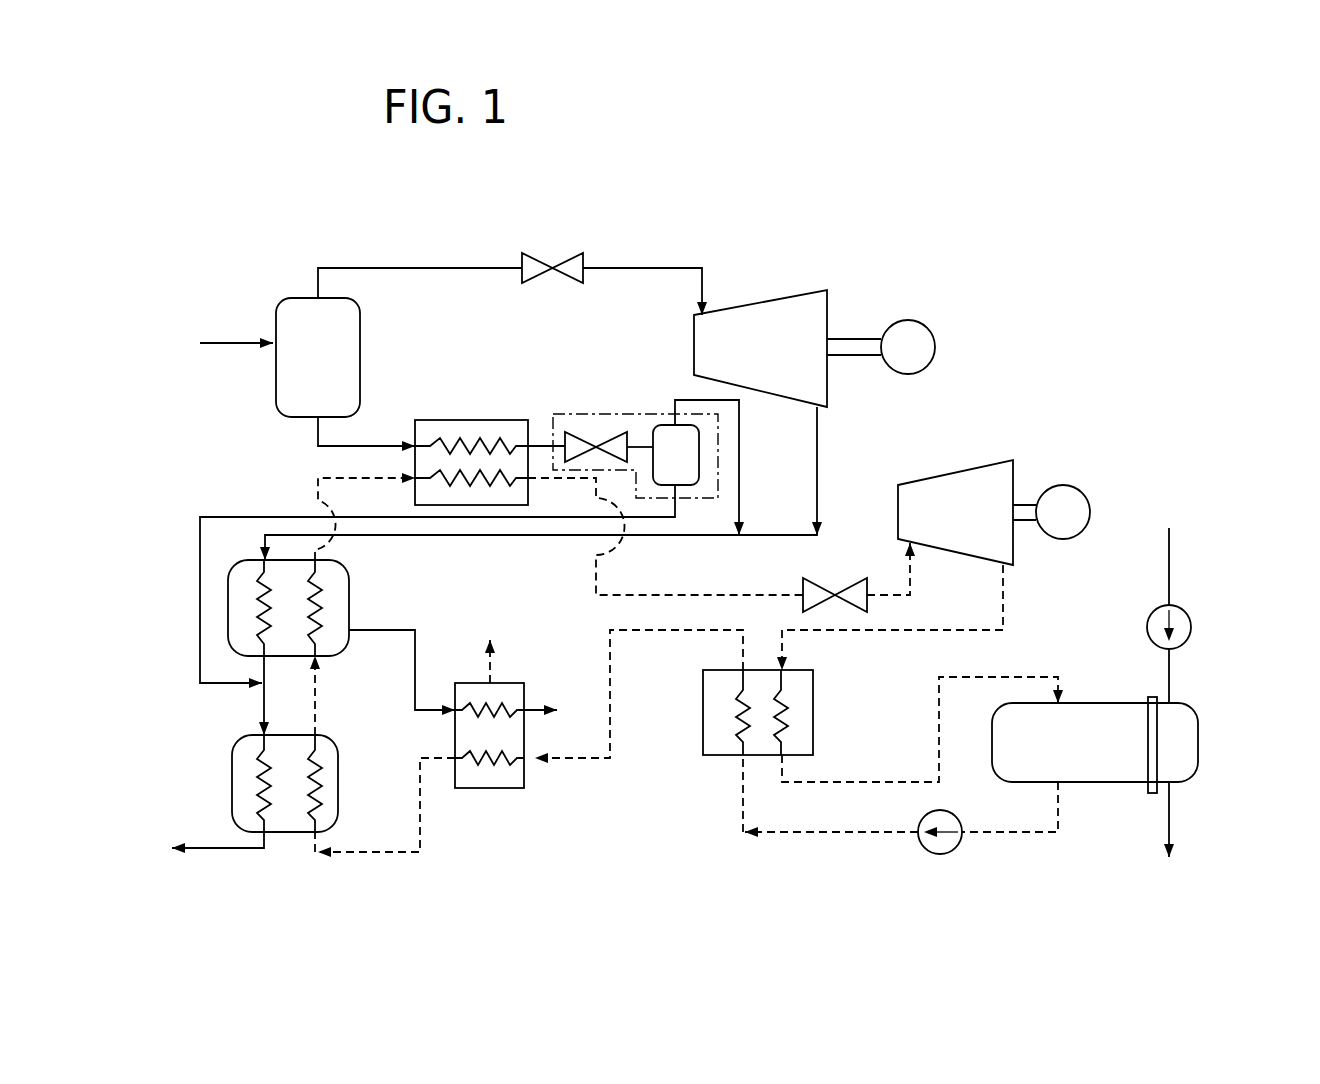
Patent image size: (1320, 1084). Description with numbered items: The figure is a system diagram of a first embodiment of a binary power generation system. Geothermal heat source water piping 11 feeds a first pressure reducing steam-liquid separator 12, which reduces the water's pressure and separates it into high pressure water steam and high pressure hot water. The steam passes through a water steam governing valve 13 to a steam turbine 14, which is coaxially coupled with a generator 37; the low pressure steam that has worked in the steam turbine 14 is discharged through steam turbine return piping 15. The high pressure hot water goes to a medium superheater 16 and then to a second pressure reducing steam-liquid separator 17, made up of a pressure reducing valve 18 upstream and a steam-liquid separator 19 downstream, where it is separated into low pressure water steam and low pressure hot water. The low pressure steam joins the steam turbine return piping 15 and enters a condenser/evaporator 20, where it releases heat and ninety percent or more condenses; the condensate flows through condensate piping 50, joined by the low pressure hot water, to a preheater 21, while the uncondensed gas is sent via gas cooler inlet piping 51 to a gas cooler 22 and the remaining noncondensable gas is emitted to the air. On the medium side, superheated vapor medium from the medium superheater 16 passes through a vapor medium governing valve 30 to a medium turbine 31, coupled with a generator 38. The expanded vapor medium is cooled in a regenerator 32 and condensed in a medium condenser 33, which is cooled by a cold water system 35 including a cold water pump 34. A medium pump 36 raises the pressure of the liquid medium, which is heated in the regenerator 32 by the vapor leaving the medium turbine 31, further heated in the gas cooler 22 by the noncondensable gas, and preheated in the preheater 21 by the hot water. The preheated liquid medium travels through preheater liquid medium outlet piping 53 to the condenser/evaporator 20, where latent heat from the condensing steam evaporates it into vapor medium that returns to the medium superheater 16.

The geothermal heat source water piping 11 is at (234, 336).
The first pressure reducing steam-liquid separator 12 is at (360, 333).
The water steam governing valve 13 is at (563, 256).
The steam turbine 14 is at (768, 298).
The steam turbine return piping 15 is at (820, 443).
The medium superheater 16 is at (467, 418).
The second pressure reducing steam-liquid separator 17 is at (576, 412).
The pressure reducing valve 18 is at (614, 432).
The steam-liquid separator 19 is at (699, 455).
The condenser/evaporator 20 is at (349, 592).
The preheater 21 is at (232, 778).
The gas cooler 22 is at (492, 790).
The vapor medium governing valve 30 is at (848, 578).
The medium turbine 31 is at (955, 473).
The regenerator 32 is at (813, 710).
The medium condenser 33 is at (1096, 703).
The cold water pump 34 is at (1191, 627).
The cold water system 35 is at (1186, 562).
The medium pump 36 is at (937, 855).
The generator 37 is at (907, 320).
The generator 38 is at (1068, 484).
The condensate piping 50 is at (258, 701).
The gas cooler inlet piping 51 is at (423, 640).
The preheater liquid medium outlet piping 53 is at (320, 700).